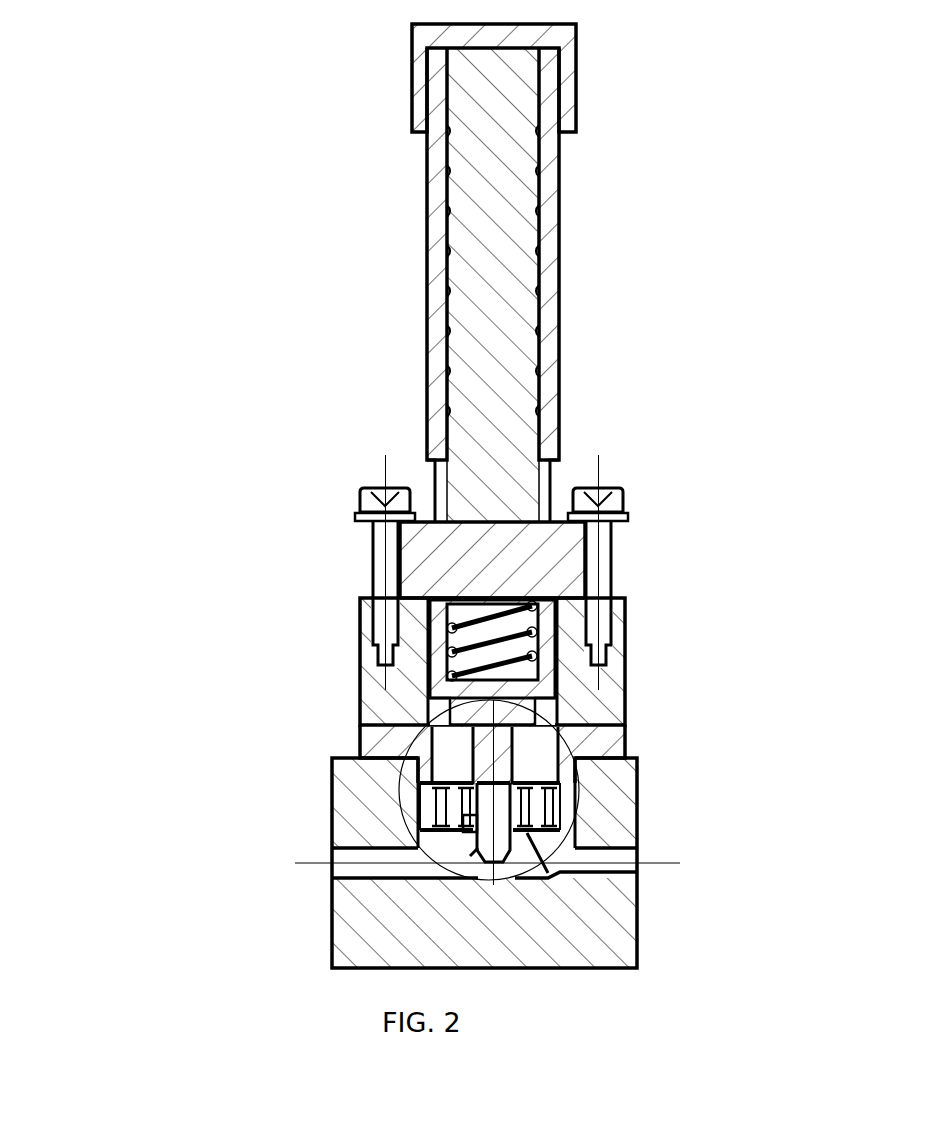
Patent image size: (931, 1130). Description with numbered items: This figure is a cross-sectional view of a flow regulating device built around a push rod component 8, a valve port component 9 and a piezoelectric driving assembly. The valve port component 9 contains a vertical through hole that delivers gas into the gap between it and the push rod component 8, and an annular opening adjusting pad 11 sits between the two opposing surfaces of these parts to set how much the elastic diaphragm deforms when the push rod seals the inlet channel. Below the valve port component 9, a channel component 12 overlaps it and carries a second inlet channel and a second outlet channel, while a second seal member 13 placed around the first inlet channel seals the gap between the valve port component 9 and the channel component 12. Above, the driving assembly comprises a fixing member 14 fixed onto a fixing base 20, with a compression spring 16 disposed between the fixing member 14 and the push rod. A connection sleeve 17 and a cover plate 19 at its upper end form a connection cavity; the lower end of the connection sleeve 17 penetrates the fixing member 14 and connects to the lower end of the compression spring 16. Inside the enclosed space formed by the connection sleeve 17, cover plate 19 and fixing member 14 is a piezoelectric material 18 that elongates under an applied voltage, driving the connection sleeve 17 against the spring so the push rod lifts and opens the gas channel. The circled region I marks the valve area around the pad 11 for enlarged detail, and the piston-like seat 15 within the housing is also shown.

The push rod component 8 is at (378, 740).
The valve port component 9 is at (427, 808).
The opening adjusting pad 11 is at (517, 803).
The channel component 12 is at (343, 835).
The second seal member 13 is at (418, 819).
The fixing member 14 is at (445, 548).
The spring-loaded piston 15 is at (595, 655).
The compression spring 16 is at (398, 592).
The connection sleeve 17 is at (437, 272).
The piezoelectric material 18 is at (483, 192).
The cover plate 19 is at (562, 42).
The fixing base 20 is at (383, 695).
The detail region I is at (575, 745).